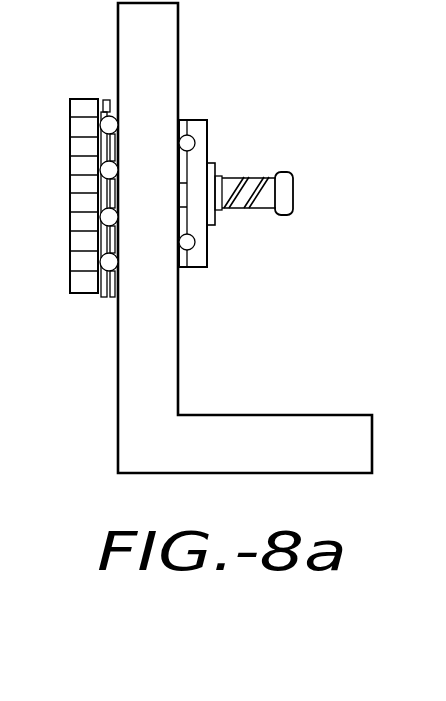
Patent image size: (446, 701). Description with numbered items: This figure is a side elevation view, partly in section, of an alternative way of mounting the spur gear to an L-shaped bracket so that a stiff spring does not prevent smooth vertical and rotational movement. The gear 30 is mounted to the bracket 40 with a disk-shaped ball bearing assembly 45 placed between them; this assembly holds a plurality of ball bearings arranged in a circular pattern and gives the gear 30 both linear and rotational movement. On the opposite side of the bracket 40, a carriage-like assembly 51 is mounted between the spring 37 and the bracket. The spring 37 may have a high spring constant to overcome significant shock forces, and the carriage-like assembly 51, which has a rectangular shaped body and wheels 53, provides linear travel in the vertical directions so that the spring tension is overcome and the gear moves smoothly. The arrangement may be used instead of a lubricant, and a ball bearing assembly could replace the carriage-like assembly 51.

The gear 30 is at (85, 285).
The spring 37 is at (247, 212).
The bracket 40 is at (166, 41).
The ball bearing assembly 45 is at (106, 100).
The carriage-like assembly 51 is at (192, 270).
The wheels 53 is at (184, 147).